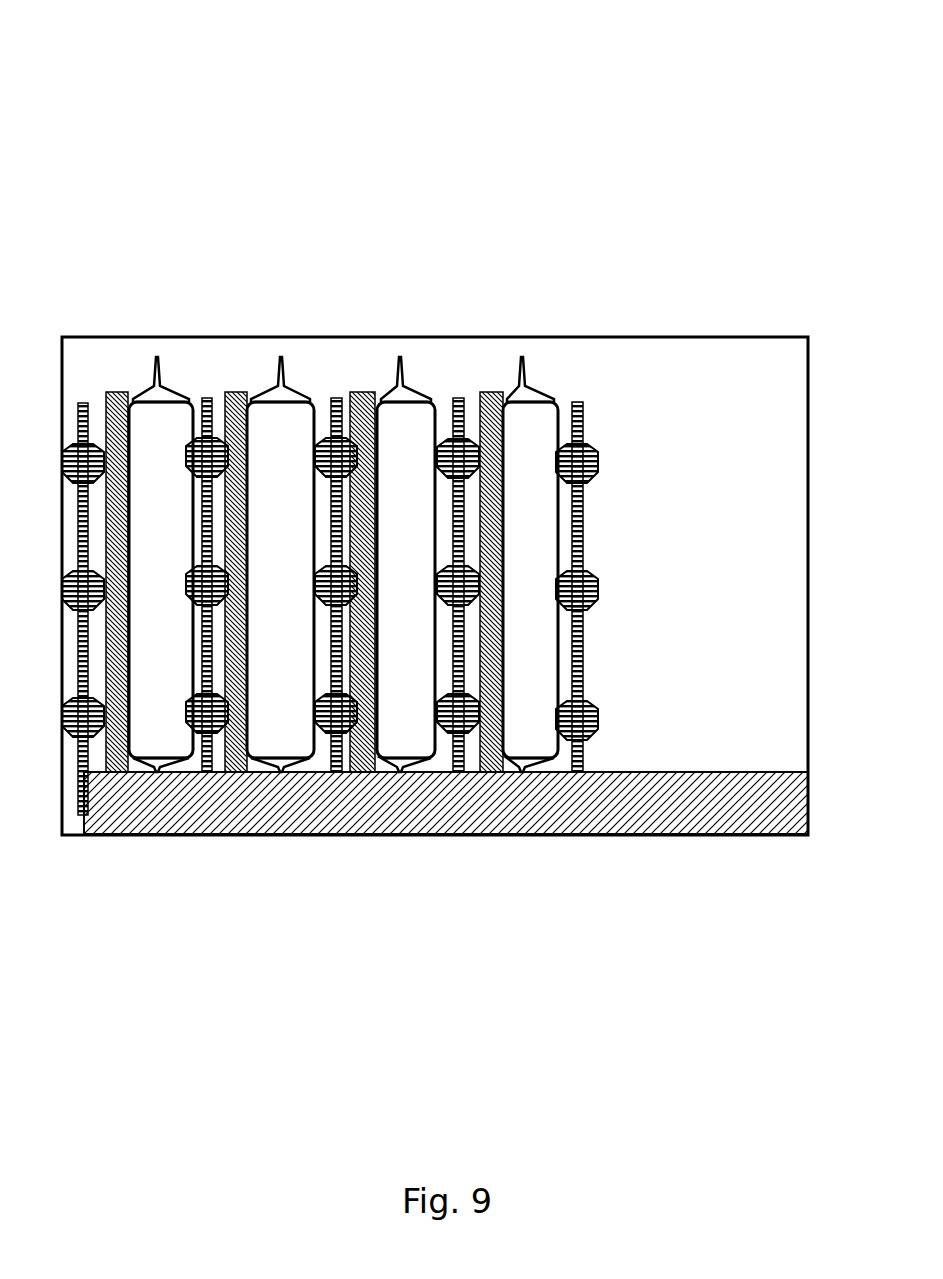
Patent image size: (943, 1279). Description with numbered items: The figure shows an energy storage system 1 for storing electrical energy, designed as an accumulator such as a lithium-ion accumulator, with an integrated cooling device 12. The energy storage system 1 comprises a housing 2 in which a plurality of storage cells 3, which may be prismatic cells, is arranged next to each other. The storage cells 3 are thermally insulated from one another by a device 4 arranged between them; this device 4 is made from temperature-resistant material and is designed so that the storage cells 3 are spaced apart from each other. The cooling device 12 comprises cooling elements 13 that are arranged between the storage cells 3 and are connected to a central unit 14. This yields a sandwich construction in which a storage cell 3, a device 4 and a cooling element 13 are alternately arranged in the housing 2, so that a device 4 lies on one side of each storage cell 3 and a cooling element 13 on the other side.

The energy storage system 1 is at (356, 222).
The housing 2 is at (628, 337).
The storage cell 3 is at (535, 465).
The device 4 is at (580, 640).
The cooling device 12 is at (533, 792).
The cooling element 13 is at (358, 712).
The central unit 14 is at (182, 788).